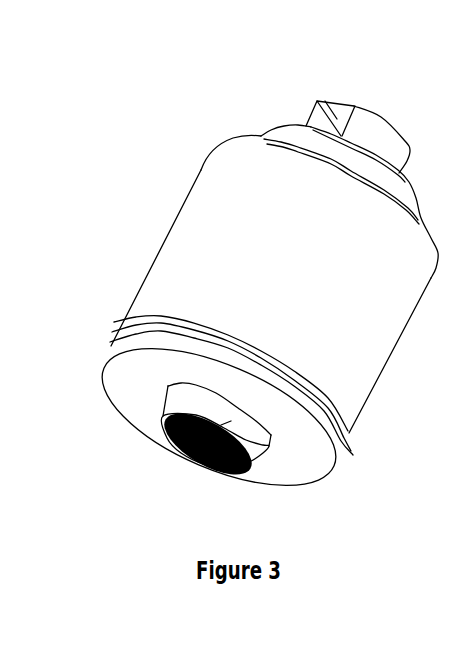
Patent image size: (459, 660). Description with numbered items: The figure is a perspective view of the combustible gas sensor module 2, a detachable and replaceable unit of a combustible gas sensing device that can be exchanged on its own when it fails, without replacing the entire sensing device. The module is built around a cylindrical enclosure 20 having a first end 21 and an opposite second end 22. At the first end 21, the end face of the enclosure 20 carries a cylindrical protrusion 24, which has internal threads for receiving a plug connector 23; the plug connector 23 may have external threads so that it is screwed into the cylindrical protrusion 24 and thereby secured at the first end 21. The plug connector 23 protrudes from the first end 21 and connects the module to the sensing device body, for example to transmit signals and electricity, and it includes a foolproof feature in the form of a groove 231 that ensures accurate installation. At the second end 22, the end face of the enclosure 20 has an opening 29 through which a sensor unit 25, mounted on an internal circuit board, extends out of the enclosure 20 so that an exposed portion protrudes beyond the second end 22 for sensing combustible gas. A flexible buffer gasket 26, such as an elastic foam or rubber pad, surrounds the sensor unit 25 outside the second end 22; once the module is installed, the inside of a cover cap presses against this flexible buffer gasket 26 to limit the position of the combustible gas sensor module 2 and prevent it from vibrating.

The combustible gas sensor module 2 is at (183, 232).
The enclosure 20 is at (165, 292).
The first end 21 is at (243, 138).
The second end 22 is at (111, 347).
The plug connector 23 is at (385, 133).
The groove 231 is at (316, 103).
The cylindrical protrusion 24 is at (278, 132).
The sensor unit 25 is at (203, 458).
The flexible buffer gasket 26 is at (148, 360).
The opening 29 is at (168, 402).